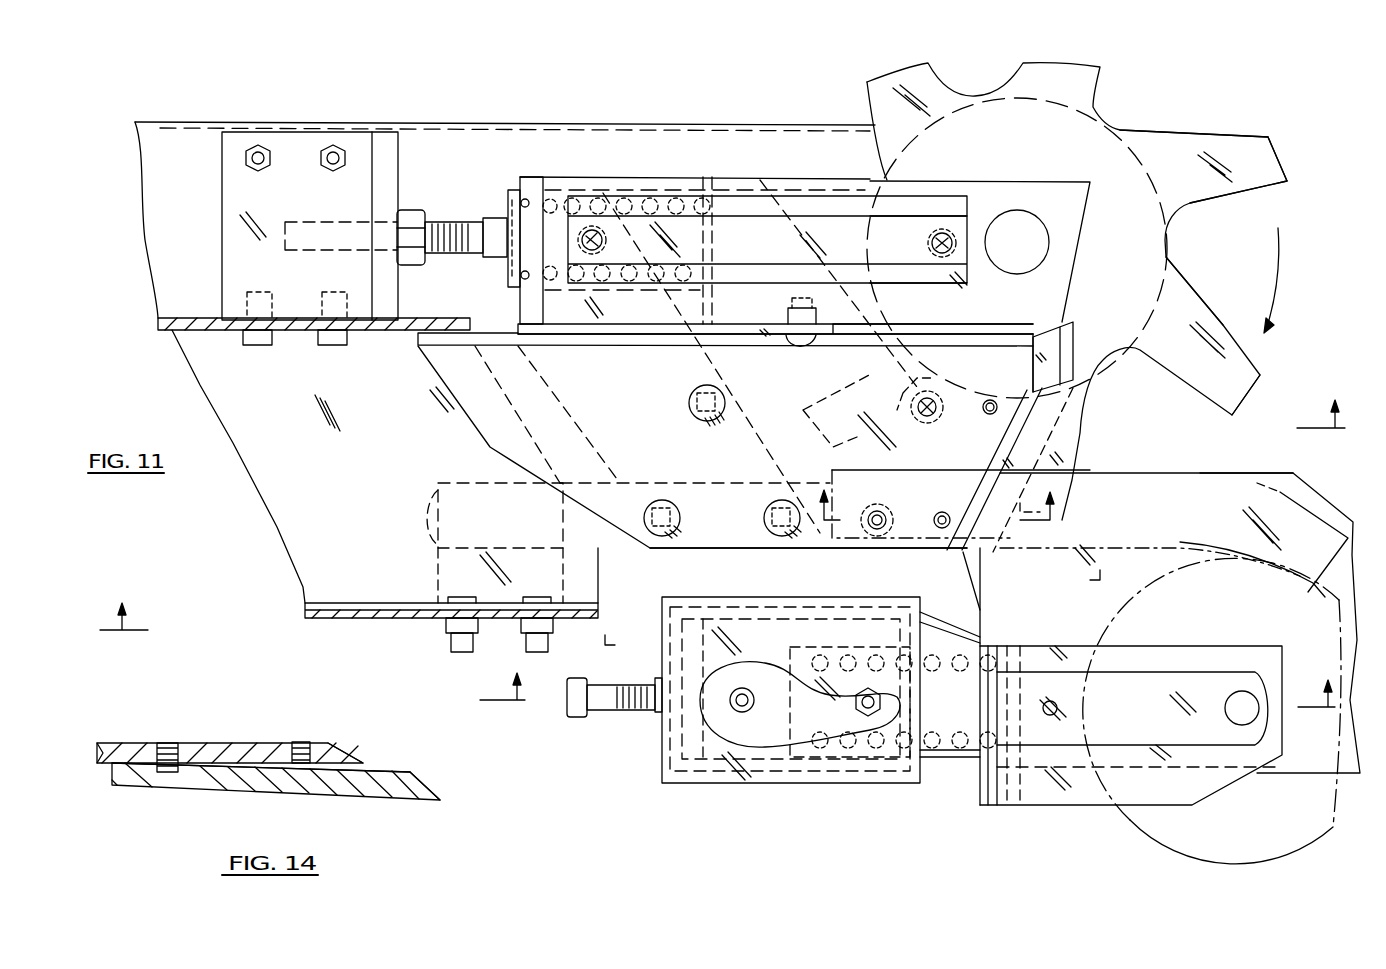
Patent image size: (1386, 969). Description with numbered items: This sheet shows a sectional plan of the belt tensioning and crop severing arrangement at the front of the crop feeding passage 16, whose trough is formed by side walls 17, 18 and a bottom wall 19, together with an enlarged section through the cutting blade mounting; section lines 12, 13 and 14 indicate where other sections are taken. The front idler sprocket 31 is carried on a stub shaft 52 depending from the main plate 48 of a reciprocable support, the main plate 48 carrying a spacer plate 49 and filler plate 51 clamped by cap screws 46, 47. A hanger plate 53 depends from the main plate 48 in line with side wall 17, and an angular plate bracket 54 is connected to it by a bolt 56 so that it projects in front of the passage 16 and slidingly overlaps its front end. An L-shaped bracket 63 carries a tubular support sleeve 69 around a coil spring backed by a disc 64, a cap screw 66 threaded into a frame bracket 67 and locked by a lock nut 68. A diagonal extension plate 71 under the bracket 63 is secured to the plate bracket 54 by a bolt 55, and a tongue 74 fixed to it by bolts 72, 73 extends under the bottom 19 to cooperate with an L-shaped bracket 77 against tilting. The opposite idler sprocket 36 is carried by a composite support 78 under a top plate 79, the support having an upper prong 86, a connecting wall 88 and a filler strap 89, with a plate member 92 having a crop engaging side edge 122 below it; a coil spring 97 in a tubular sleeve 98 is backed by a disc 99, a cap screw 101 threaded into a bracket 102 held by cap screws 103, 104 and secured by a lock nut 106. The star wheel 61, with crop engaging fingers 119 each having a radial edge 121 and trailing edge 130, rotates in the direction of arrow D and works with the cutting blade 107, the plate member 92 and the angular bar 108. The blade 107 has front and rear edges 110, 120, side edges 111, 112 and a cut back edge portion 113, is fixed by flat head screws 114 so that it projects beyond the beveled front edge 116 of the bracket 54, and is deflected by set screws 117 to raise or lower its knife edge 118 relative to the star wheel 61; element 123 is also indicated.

In FIG. 11, the crop feeding passage 16 is at (352, 497).
In FIG. 11, the side wall 17 is at (305, 333).
In FIG. 11, the side wall 18 is at (336, 602).
In FIG. 11, the bottom wall 19 is at (272, 527).
In FIG. 11, the front idler sprocket 31 is at (1033, 100).
In FIG. 11, the front idler sprocket 36 is at (1130, 602).
In FIG. 11, the cap screw 46 is at (930, 243).
In FIG. 11, the cap screw 47 is at (603, 245).
In FIG. 11, the main plate 48 is at (1020, 181).
In FIG. 11, the spacer plate 49 is at (940, 280).
In FIG. 11, the filler plate 51 is at (895, 214).
In FIG. 11, the stub shaft 52 is at (1036, 222).
In FIG. 11, the hanger plate 53 is at (740, 326).
In FIG. 11, the angular plate bracket 54 is at (430, 381).
In FIG. 14, the angular plate bracket 54 is at (120, 748).
In FIG. 11, the bolt 55 is at (724, 392).
In FIG. 11, the bolt 56 is at (802, 350).
In FIG. 11, the star wheel 61 is at (1178, 132).
In FIG. 11, the L-shaped bracket 63 is at (718, 196).
In FIG. 11, the disc 64 is at (508, 198).
In FIG. 11, the cap screw 66 is at (446, 224).
In FIG. 11, the bracket 67 is at (222, 197).
In FIG. 11, the lock nut 68 is at (410, 210).
In FIG. 11, the tubular support sleeve 69 is at (645, 183).
In FIG. 11, the diagonal extension plate 71 is at (605, 452).
In FIG. 11, the bolt 72 is at (681, 521).
In FIG. 11, the bolt 73 is at (766, 512).
In FIG. 11, the tongue 74 is at (628, 548).
In FIG. 11, the L-shaped bracket 77 is at (500, 640).
In FIG. 11, the composite support 78 is at (1077, 803).
In FIG. 11, the top plate 79 is at (705, 730).
In FIG. 11, the upper prong 86 is at (1145, 648).
In FIG. 11, the connecting wall 88 is at (982, 800).
In FIG. 11, the filler strap 89 is at (1212, 670).
In FIG. 11, the plate member 92 is at (1293, 473).
In FIG. 11, the coil spring 97 is at (938, 734).
In FIG. 11, the tubular sleeve 98 is at (946, 760).
In FIG. 11, the disc 99 is at (790, 650).
In FIG. 11, the cap screw 101 is at (577, 712).
In FIG. 11, the bracket 102 is at (696, 780).
In FIG. 11, the cap screw 103 is at (745, 712).
In FIG. 11, the cap screw 104 is at (860, 705).
In FIG. 11, the lock nut 106 is at (656, 682).
In FIG. 11, the cutting blade 107 is at (978, 552).
In FIG. 14, the cutting blade 107 is at (283, 783).
In FIG. 11, the angular bar 108 is at (1168, 550).
In FIG. 11, the front edge 110 is at (1060, 412).
In FIG. 14, the front edge 110 is at (420, 778).
In FIG. 11, the side edge 111 is at (895, 549).
In FIG. 11, the side edge 112 is at (1007, 340).
In FIG. 11, the cut back front edge portion 113 is at (1068, 342).
In FIG. 11, the countersunk flat head screws 114 is at (927, 416).
In FIG. 14, the countersunk flat head screws 114 is at (170, 745).
In FIG. 11, the beveled front edge 116 is at (1078, 392).
In FIG. 14, the beveled front edge 116 is at (338, 757).
In FIG. 11, the set screws 117 is at (986, 414).
In FIG. 14, the set screws 117 is at (301, 742).
In FIG. 11, the knife edge 118 is at (1045, 456).
In FIG. 14, the knife edge 118 is at (438, 800).
In FIG. 11, the crop engaging fingers 119 is at (1288, 178).
In FIG. 11, the rear edge 120 is at (961, 492).
In FIG. 11, the radial edge 121 is at (1232, 198).
In FIG. 11, the crop engaging side edge 122 is at (1250, 473).
In FIG. 11, the bar 123 is at (990, 585).
In FIG. 11, the trailing edge 130 is at (1225, 325).
In FIG. 11, the arrow D is at (1272, 300).
In FIG. 11, the section line 12 is at (722, 503).
In FIG. 11, the section line 13 is at (907, 684).
In FIG. 11, the section line 14 is at (852, 558).